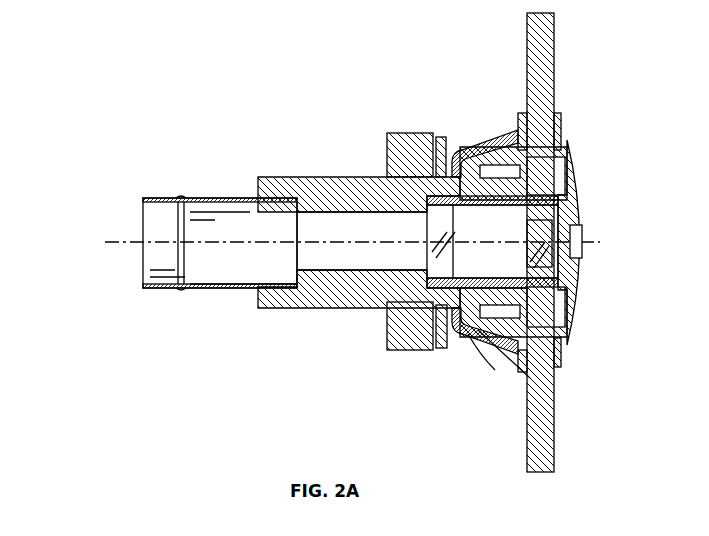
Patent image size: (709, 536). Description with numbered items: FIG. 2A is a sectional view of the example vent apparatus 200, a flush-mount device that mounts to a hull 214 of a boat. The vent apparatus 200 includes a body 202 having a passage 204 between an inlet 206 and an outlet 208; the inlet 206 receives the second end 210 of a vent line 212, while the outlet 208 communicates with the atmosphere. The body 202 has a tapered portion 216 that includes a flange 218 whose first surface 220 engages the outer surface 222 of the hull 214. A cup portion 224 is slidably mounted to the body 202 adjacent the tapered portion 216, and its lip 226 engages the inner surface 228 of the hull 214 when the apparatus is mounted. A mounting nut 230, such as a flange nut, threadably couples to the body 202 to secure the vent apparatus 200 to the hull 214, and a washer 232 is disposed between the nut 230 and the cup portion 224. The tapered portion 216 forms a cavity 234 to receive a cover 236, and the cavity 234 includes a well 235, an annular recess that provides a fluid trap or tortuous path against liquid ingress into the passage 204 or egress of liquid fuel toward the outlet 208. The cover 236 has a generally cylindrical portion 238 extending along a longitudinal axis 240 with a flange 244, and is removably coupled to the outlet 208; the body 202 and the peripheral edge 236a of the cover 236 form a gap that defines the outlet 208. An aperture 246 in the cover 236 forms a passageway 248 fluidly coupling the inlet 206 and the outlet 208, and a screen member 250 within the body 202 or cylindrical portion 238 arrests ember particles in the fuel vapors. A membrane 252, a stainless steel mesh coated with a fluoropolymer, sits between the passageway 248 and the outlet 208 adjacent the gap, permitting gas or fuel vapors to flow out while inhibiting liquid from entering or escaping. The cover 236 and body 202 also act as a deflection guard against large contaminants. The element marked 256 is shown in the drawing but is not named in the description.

The vent apparatus 200 is at (183, 66).
The body 202 is at (285, 177).
The passage 204 is at (348, 262).
The inlet 206 is at (297, 228).
The outlet 208 is at (575, 150).
The second end 210 is at (246, 290).
The vent line 212 is at (170, 199).
The hull 214 is at (554, 62).
The tapered portion 216 is at (470, 356).
The flange 218 is at (556, 370).
The first surface 220 is at (560, 345).
The outer surface 222 is at (555, 435).
The cup portion 224 is at (447, 290).
The lip 226 is at (470, 370).
The inner surface 228 is at (527, 440).
The mounting nut 230 is at (405, 133).
The washer 232 is at (441, 137).
The cavity 234 is at (500, 170).
The well 235 is at (441, 340).
The cover 236 is at (583, 215).
The peripheral edge 236a is at (585, 340).
The cylindrical portion 238 is at (385, 345).
The longitudinal axis 240 is at (119, 243).
The flange 244 is at (575, 343).
The aperture 246 is at (548, 200).
The passageway 248 is at (572, 125).
The screen member 250 is at (400, 210).
The membrane 252 is at (567, 172).
The lower cap portion 256 is at (575, 292).